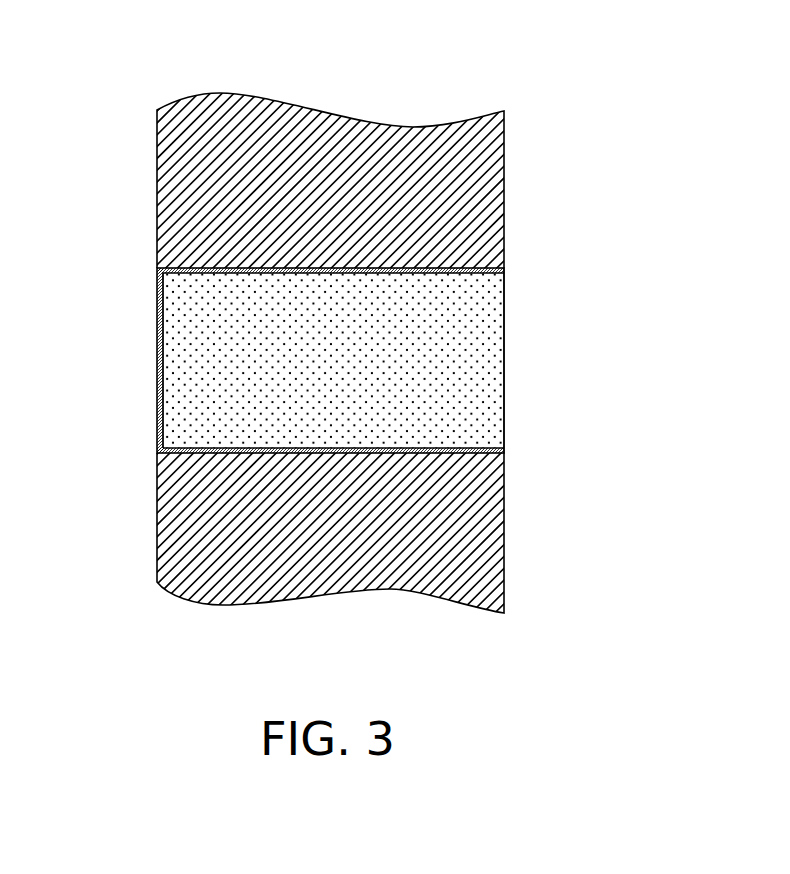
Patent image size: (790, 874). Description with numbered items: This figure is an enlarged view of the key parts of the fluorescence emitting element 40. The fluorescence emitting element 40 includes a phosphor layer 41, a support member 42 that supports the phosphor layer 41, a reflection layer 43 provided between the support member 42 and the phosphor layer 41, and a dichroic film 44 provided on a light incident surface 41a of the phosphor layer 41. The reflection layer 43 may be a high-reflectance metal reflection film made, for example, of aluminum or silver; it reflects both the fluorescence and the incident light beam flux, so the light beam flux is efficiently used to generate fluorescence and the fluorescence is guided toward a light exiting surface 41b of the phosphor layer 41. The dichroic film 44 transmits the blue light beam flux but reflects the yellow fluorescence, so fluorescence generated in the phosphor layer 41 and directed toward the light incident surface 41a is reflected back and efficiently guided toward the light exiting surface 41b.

The fluorescence emitting element 40 is at (470, 93).
The phosphor layer 41 is at (480, 328).
The light incident surface 41a is at (158, 412).
The light exiting surface 41b is at (505, 368).
The support member 42 is at (313, 137).
The reflection layer 43 is at (203, 267).
The dichroic film 44 is at (158, 346).